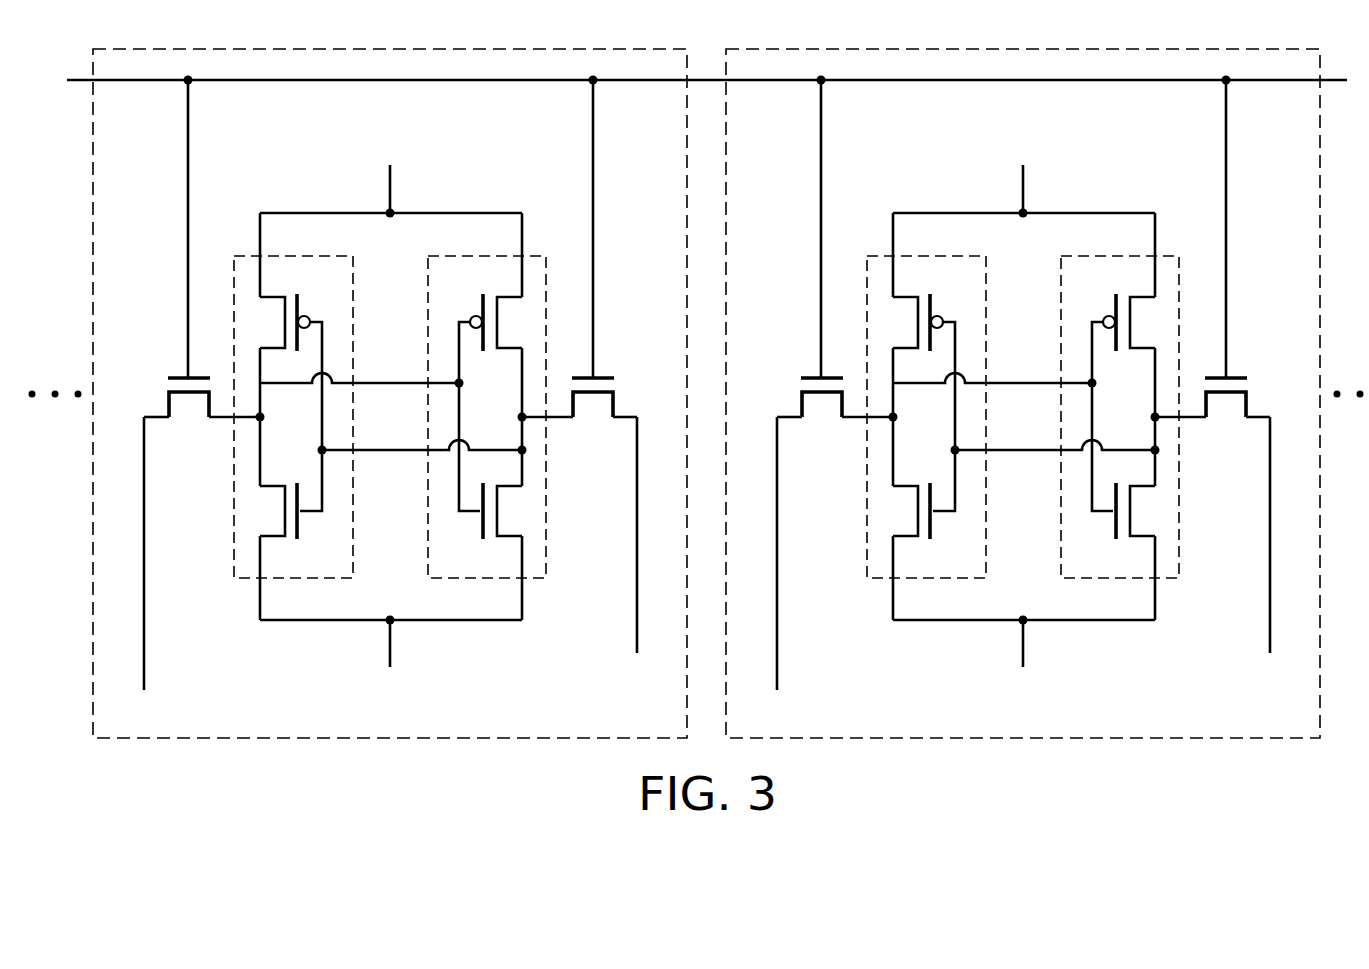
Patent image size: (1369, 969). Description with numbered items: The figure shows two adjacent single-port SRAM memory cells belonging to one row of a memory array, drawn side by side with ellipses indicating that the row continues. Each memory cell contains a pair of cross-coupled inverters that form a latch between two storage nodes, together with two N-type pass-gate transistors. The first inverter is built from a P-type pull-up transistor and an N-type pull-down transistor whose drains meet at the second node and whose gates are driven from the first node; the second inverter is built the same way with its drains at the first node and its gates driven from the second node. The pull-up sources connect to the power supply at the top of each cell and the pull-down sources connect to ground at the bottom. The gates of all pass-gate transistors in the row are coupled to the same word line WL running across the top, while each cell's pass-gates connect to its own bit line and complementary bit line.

The word line WL is at (682, 80).